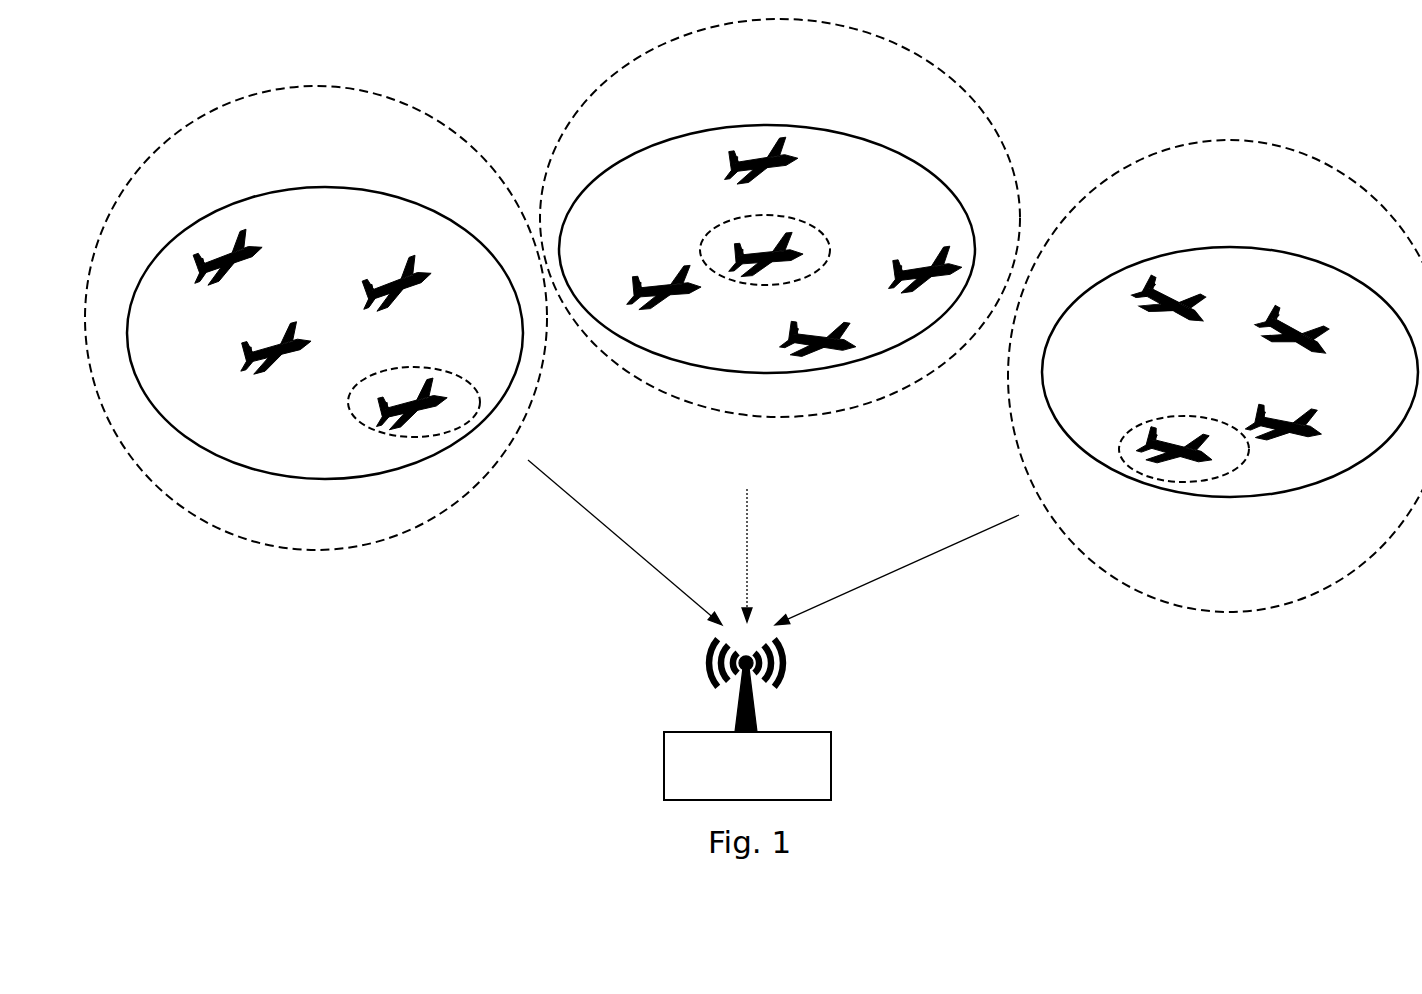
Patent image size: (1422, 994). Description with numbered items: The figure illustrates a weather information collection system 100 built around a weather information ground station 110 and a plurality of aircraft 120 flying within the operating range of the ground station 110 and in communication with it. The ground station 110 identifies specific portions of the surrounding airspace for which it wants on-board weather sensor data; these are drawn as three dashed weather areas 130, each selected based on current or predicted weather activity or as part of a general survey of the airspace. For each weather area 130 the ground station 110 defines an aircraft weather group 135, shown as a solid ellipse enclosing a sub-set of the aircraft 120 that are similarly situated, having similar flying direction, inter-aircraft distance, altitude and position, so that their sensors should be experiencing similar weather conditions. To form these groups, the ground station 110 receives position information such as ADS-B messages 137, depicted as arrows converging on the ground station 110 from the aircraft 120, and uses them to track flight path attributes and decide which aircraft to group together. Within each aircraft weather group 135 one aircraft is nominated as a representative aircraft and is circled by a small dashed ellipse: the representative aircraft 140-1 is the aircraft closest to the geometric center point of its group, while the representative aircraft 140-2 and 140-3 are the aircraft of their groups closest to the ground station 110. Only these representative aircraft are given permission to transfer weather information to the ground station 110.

The weather information collection system 100 is at (335, 660).
The weather information ground station 110 is at (834, 754).
The aircraft 120 is at (255, 266).
The weather area 130 is at (376, 96).
The aircraft weather group 135 is at (380, 188).
The ADS-B messages 137 is at (610, 530).
The representative aircraft 140-1 is at (820, 236).
The representative aircraft 140-2 is at (430, 370).
The representative aircraft 140-3 is at (1195, 418).